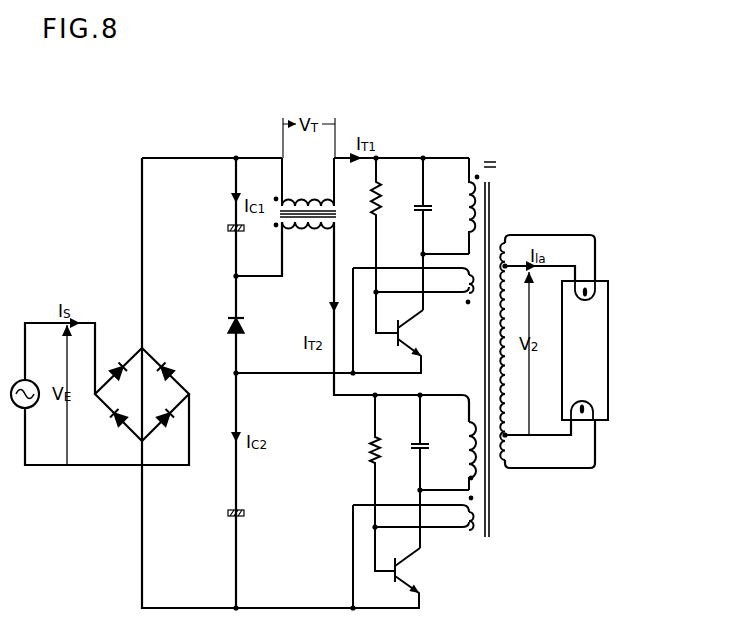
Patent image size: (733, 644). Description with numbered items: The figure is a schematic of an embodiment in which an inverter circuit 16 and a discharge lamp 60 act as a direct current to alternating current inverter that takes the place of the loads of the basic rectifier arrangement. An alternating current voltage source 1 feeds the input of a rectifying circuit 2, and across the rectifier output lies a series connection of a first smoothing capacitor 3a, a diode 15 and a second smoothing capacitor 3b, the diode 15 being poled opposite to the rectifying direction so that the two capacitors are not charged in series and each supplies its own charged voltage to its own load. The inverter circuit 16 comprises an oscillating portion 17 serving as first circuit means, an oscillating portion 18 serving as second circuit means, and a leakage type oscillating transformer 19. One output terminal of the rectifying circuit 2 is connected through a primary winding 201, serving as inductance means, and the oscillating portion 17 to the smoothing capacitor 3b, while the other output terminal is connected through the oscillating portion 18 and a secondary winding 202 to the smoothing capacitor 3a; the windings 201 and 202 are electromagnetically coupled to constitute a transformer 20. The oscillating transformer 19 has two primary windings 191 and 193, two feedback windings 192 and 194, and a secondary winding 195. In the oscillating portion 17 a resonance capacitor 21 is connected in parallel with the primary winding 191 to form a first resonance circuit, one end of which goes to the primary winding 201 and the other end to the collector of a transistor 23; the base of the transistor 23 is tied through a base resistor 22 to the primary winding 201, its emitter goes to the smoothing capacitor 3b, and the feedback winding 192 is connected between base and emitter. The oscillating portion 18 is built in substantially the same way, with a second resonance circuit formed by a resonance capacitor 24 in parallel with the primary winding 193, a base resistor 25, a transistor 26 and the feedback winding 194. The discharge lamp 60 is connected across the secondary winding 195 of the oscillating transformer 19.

The alternating current voltage source 1 is at (16, 384).
The rectifying circuit 2 is at (160, 353).
The first smoothing capacitor 3a is at (228, 228).
The second smoothing capacitor 3b is at (228, 513).
The diode 15 is at (242, 324).
The inverter circuit 16 is at (483, 126).
The oscillating portion 17 is at (415, 238).
The oscillating portion 18 is at (415, 504).
The oscillating transformer 19 is at (539, 349).
The transformer 20 is at (325, 207).
The resonance capacitor 21 is at (430, 205).
The base resistor 22 is at (381, 208).
The transistor 23 is at (396, 344).
The resonance capacitor 24 is at (427, 441).
The base resistor 25 is at (370, 455).
The transistor 26 is at (392, 580).
The discharge lamp 60 is at (601, 355).
The primary winding 191 is at (461, 208).
The feedback winding 192 is at (460, 297).
The primary winding 193 is at (462, 448).
The feedback winding 194 is at (468, 531).
The secondary winding 195 is at (512, 425).
The primary winding 201 is at (300, 196).
The secondary winding 202 is at (300, 232).